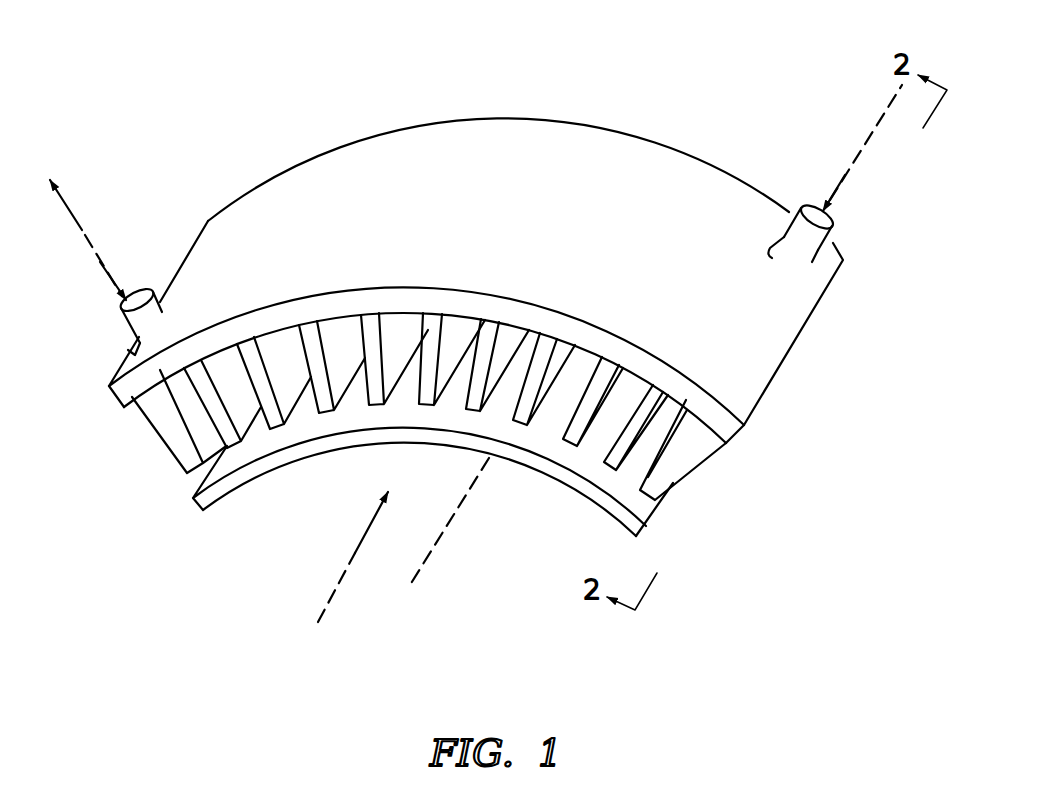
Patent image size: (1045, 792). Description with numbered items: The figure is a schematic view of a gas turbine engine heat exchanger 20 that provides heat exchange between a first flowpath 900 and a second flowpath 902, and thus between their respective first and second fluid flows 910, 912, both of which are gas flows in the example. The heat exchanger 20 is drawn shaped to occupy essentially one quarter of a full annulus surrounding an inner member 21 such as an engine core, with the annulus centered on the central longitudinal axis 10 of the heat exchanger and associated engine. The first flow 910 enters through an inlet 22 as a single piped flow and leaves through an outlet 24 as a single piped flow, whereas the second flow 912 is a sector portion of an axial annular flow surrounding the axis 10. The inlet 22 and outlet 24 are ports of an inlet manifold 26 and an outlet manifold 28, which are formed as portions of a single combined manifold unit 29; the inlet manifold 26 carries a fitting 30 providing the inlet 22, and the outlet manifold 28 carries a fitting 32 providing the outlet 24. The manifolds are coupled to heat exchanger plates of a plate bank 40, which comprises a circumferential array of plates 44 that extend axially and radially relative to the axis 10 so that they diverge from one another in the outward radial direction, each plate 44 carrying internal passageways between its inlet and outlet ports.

The central longitudinal axis 10 is at (413, 573).
The gas turbine engine heat exchanger 20 is at (302, 80).
The inner member 21 is at (561, 481).
The inlet 22 is at (836, 216).
The outlet 24 is at (127, 301).
The inlet manifold 26 is at (574, 150).
The outlet manifold 28 is at (566, 304).
The combined manifold unit 29 is at (487, 168).
The fitting 30 is at (805, 252).
The fitting 32 is at (187, 330).
The plate bank 40 is at (674, 484).
The plates 44 is at (702, 484).
The first flowpath 900 is at (105, 258).
The second flowpath 902 is at (345, 568).
The first fluid flow 910 is at (70, 206).
The second fluid flow 912 is at (377, 513).